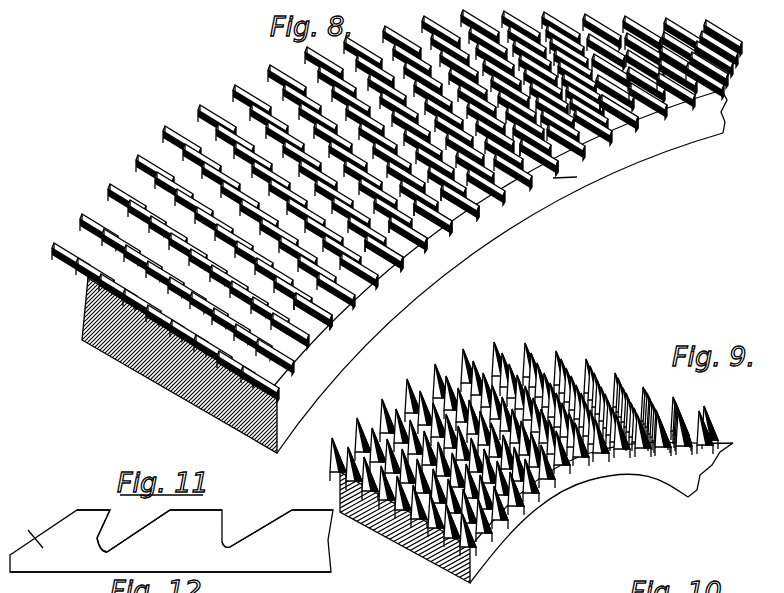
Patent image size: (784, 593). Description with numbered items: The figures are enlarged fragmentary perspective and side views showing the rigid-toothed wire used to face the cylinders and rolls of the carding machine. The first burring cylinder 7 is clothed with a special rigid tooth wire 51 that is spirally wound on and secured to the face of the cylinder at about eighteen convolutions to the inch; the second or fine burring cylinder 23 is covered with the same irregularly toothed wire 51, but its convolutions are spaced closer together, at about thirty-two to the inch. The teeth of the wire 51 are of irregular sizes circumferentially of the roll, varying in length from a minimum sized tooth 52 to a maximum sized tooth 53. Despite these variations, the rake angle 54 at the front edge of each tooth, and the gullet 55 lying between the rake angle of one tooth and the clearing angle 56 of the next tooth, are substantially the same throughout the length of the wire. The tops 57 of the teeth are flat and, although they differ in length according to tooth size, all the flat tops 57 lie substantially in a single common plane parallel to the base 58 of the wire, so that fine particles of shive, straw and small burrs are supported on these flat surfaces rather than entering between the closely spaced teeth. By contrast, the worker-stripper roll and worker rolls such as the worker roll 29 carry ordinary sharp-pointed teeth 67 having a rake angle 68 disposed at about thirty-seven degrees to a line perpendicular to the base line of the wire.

In FIG. 8, the first burring cylinder 7 is at (538, 203).
In FIG. 8, the second or fine burring cylinder 23 is at (500, 293).
In FIG. 9, the worker roll 29 is at (667, 478).
In FIG. 8, the rigid tooth wire 51 is at (648, 110).
In FIG. 11, the rigid tooth wire 51 is at (308, 553).
In FIG. 8, the minimum sized tooth 52 is at (530, 152).
In FIG. 11, the minimum sized tooth 52 is at (90, 524).
In FIG. 8, the maximum sized tooth 53 is at (610, 113).
In FIG. 11, the maximum sized tooth 53 is at (196, 522).
In FIG. 8, the rake angle 54 is at (420, 232).
In FIG. 11, the rake angle 54 is at (117, 522).
In FIG. 8, the gullet 55 is at (380, 292).
In FIG. 11, the gullet 55 is at (122, 528).
In FIG. 8, the clearing angle 56 is at (442, 205).
In FIG. 11, the clearing angle 56 is at (170, 510).
In FIG. 8, the flat tops of the teeth 57 is at (318, 310).
In FIG. 11, the flat tops of the teeth 57 is at (93, 509).
In FIG. 8, the base of the wire 58 is at (445, 230).
In FIG. 11, the base of the wire 58 is at (250, 572).
In FIG. 9, the teeth of the worker-stripper roll wire 67 is at (543, 468).
In FIG. 9, the rake angle 68 is at (692, 428).